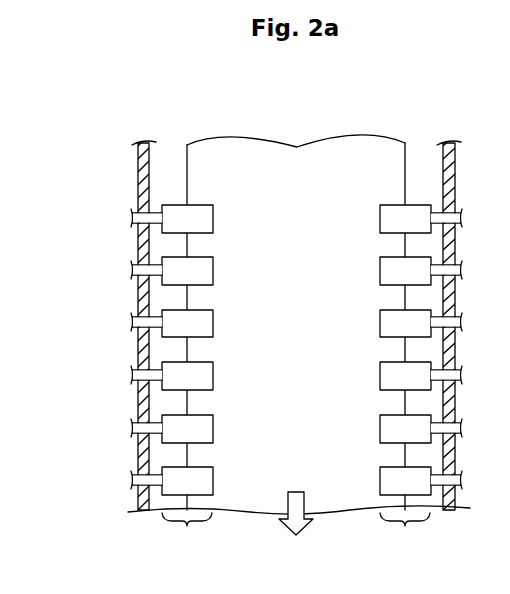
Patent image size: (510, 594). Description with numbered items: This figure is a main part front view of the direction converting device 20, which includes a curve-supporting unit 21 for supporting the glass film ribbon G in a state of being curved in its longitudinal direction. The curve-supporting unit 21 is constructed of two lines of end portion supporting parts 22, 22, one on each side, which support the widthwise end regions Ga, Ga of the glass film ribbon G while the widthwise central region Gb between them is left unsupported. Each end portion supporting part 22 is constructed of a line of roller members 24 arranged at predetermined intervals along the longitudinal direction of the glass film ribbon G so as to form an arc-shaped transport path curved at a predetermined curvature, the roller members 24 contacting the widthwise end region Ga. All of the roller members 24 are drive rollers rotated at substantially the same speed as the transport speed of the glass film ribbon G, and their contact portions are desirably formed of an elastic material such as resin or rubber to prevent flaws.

The direction converting device 20 is at (272, 329).
The curve-supporting unit 21 is at (155, 448).
The end portion supporting part 22 is at (296, 533).
The roller member 24 is at (175, 227).
The glass film ribbon G is at (305, 347).
The widthwise end region Ga is at (198, 157).
The widthwise central region Gb is at (298, 165).